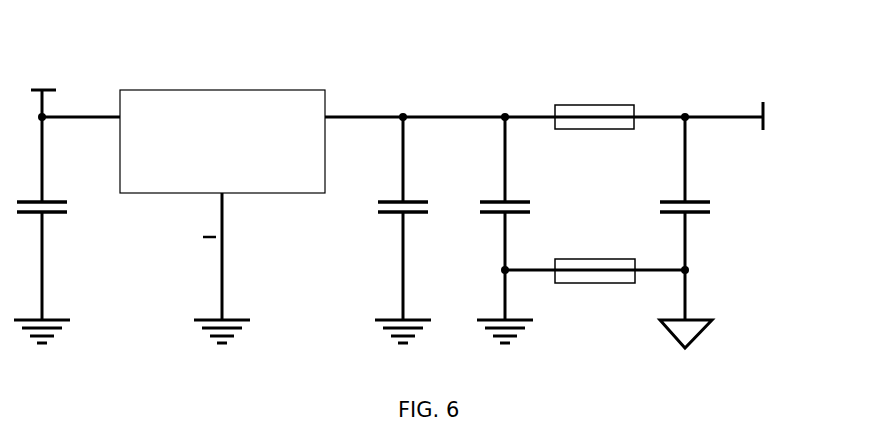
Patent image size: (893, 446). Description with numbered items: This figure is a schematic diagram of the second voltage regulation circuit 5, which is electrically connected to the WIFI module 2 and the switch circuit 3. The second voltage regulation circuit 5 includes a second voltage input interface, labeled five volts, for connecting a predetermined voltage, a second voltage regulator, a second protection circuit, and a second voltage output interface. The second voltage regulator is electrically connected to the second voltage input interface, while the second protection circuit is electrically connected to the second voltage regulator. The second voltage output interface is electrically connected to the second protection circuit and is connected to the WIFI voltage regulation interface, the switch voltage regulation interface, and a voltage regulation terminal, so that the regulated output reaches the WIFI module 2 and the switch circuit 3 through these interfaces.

The second voltage regulation circuit 5 is at (371, 55).
The switch circuit 3 is at (81, 106).
The WIFI module 2 is at (364, 106).